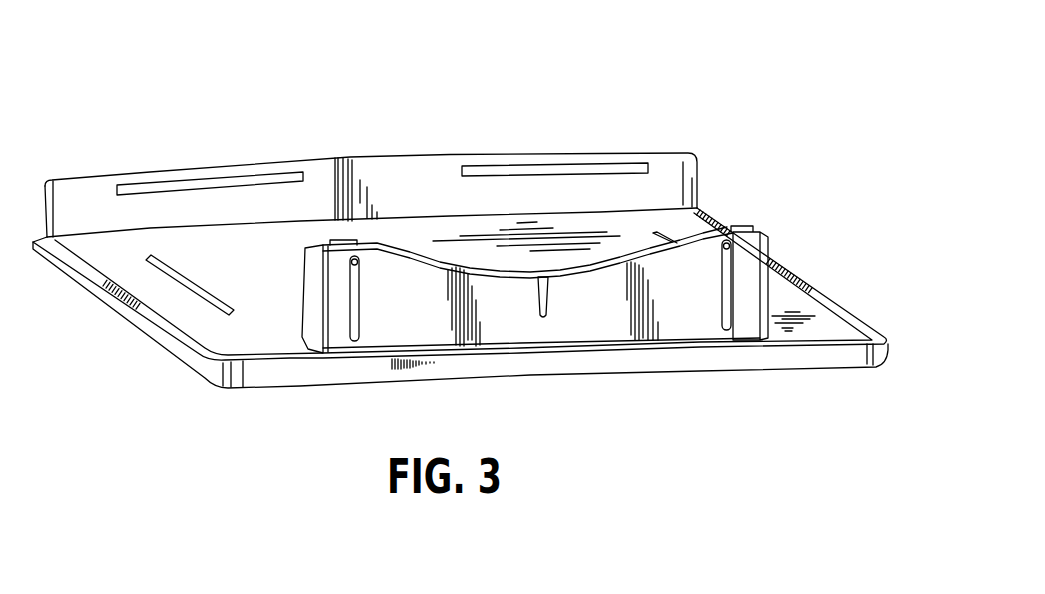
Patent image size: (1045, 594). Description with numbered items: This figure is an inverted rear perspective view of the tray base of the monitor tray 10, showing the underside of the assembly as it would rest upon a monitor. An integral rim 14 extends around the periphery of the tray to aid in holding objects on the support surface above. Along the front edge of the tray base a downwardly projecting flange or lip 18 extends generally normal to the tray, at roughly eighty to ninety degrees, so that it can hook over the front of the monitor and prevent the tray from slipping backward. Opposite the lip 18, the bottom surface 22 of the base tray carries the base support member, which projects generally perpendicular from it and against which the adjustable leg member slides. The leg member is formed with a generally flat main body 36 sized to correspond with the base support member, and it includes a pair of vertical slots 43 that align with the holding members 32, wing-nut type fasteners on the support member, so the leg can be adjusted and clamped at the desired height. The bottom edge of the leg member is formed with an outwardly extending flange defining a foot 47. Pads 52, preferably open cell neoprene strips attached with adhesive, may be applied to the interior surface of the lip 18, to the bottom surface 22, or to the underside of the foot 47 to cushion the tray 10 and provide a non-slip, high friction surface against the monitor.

The tray 10 is at (644, 98).
The rim 14 is at (640, 367).
The lip 18 is at (420, 202).
The bottom surface 22 is at (277, 281).
The holding members 32 is at (733, 252).
The main body 36 is at (607, 325).
The vertical slots 43 is at (360, 292).
The foot 47 is at (763, 238).
The pads 52 is at (197, 284).